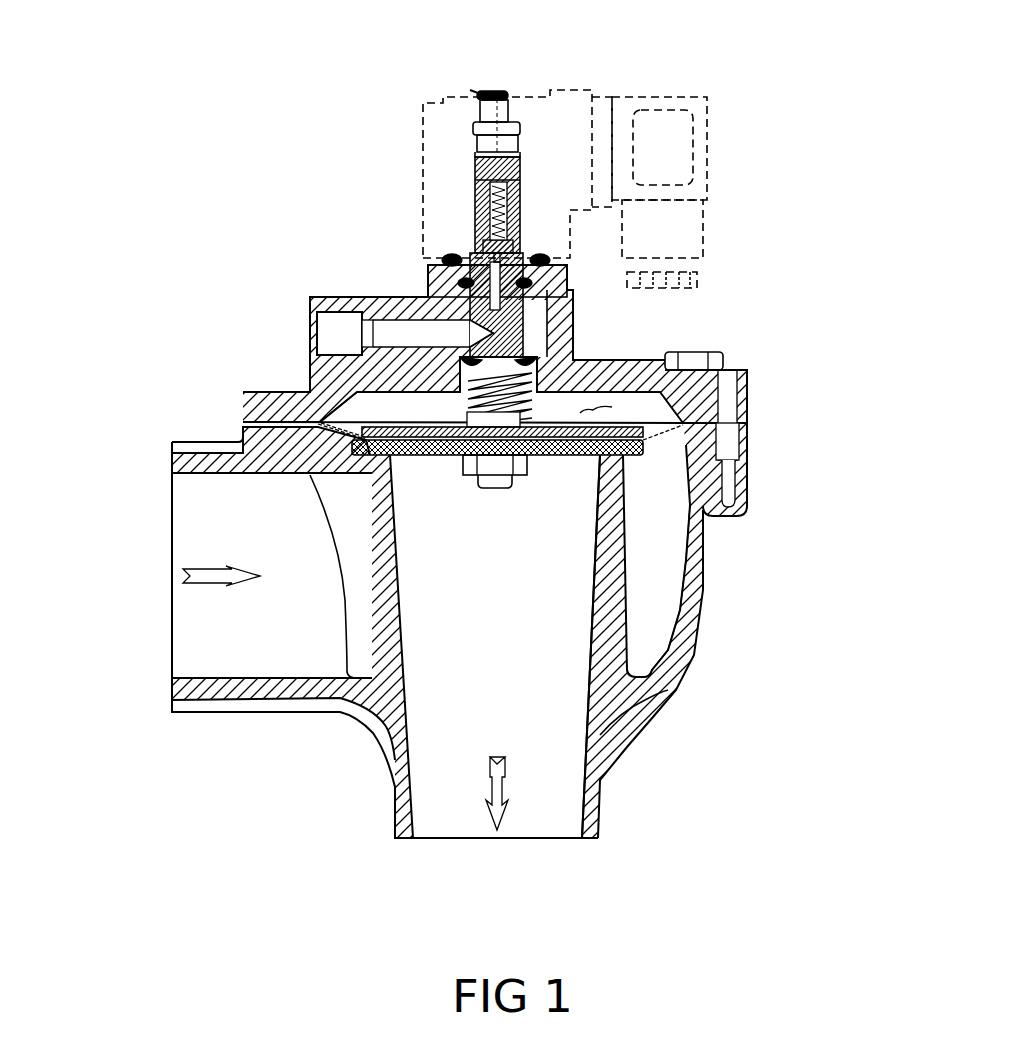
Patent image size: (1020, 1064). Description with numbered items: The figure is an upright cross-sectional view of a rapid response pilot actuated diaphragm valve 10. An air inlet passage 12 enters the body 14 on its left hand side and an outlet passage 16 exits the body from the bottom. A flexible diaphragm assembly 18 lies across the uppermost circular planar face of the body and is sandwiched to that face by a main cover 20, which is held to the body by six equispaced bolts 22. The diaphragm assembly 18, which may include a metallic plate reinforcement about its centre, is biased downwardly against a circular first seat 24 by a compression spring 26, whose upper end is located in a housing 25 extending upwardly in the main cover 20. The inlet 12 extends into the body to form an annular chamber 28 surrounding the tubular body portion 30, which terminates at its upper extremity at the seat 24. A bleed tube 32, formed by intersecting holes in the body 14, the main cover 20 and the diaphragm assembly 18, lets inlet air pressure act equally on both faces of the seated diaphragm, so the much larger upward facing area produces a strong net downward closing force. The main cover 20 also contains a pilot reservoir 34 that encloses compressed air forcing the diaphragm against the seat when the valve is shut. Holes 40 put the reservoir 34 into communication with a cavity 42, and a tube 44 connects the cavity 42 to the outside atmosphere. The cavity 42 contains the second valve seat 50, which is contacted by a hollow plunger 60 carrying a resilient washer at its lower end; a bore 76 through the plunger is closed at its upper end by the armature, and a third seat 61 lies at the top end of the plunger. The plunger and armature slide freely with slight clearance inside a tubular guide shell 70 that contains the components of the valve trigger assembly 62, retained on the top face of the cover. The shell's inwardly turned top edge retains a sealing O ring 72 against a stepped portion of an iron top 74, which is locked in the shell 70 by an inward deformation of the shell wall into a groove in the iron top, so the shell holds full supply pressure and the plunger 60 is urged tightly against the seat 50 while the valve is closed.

The valve 10 is at (620, 819).
The air inlet passage 12 is at (53, 603).
The body 14 is at (255, 702).
The outlet passage 16 is at (455, 817).
The flexible diaphragm assembly 18 is at (549, 462).
The main cover 20 is at (603, 360).
The bolts 22 is at (690, 360).
The first seat 24 is at (400, 458).
The housing 25 is at (425, 378).
The compression spring 26 is at (463, 407).
The annular chamber 28 is at (650, 543).
The tubular body portion 30 is at (597, 528).
The bleed tube 32 is at (736, 434).
The pilot reservoir 34 is at (612, 408).
The holes 40 is at (573, 328).
The cavity 42 is at (575, 290).
The tube 44 is at (330, 330).
The second valve seat 50 is at (493, 308).
The hollow plunger 60 is at (527, 247).
The third seat 61 is at (477, 253).
The valve trigger assembly 62 is at (520, 180).
The tubular guide shell 70 is at (477, 179).
The sealing O ring 72 is at (520, 120).
The iron top 74 is at (500, 91).
The bore 76 is at (433, 277).